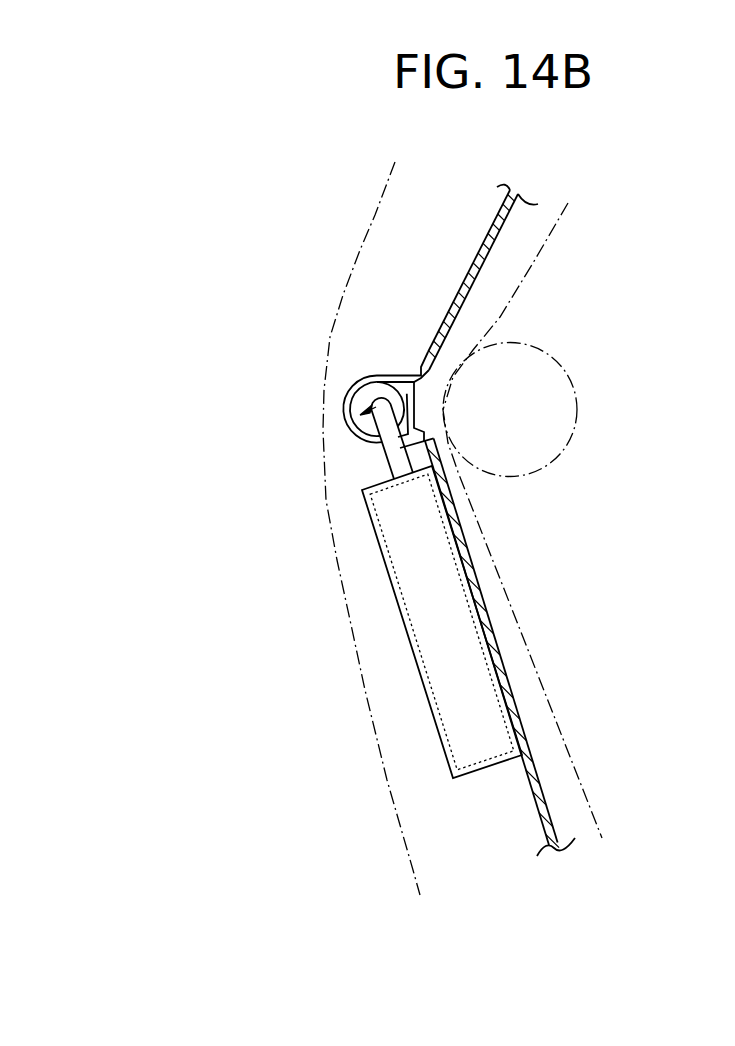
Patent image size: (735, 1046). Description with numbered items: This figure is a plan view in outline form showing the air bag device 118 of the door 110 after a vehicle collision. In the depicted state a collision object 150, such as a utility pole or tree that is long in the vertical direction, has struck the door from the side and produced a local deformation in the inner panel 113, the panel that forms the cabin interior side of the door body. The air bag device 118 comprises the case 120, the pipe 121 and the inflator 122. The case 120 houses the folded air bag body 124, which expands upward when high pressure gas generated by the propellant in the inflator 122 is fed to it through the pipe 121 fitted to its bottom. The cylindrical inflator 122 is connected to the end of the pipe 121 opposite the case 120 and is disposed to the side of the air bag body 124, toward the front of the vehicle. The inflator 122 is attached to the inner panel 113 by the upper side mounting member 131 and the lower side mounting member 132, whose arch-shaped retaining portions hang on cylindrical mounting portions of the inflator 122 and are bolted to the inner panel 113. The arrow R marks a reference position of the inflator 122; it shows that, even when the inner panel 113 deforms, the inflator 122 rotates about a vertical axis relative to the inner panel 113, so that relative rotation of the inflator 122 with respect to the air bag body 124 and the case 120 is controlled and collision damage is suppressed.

The door 110 is at (579, 298).
The collision object 150 is at (577, 404).
The inner panel 113 is at (551, 797).
The inflator 122 is at (356, 386).
The upper side mounting member 131 is at (397, 375).
The lower side mounting member 132 is at (403, 376).
The arrow R is at (347, 393).
The pipe 121 is at (382, 461).
The case 120 is at (441, 735).
The air bag body 124 is at (400, 593).
The air bag device 118 is at (468, 790).